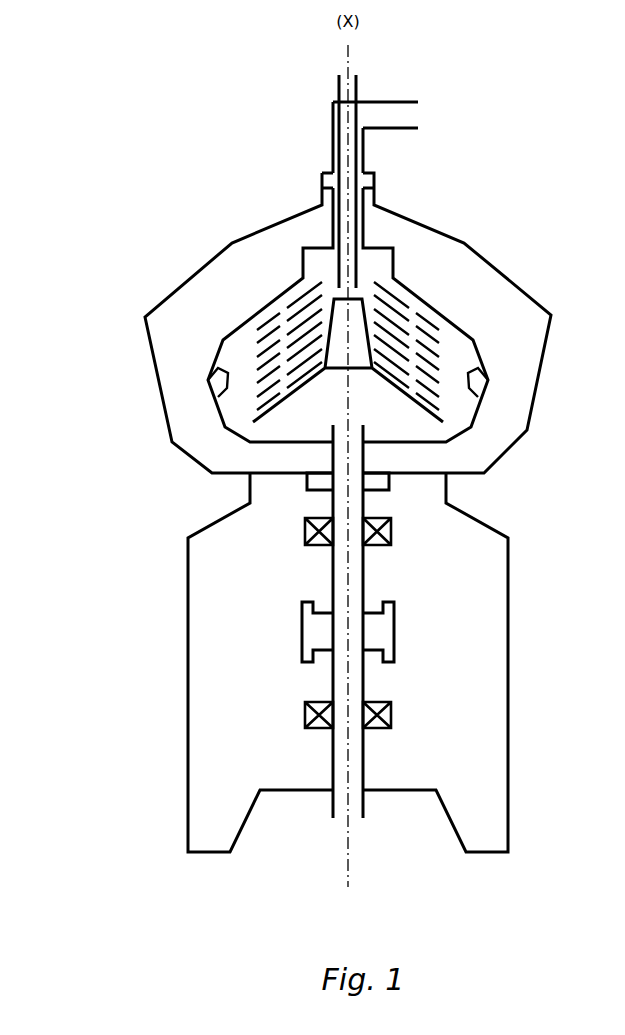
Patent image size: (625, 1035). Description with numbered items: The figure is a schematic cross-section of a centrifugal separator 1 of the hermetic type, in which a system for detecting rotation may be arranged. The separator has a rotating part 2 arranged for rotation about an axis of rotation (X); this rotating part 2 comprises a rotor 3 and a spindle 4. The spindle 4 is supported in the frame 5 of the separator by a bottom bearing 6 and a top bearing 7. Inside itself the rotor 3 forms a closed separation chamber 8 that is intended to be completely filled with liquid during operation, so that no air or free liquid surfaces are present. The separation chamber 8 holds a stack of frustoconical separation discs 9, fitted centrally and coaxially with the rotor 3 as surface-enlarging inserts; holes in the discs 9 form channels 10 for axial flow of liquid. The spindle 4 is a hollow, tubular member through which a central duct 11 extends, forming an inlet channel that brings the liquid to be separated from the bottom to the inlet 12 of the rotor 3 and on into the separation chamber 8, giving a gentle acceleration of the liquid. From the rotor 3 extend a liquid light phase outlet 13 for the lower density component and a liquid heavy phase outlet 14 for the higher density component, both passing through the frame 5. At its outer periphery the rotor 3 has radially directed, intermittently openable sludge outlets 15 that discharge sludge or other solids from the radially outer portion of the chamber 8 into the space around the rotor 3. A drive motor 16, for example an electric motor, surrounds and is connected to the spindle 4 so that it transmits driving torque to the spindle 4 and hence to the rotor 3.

The centrifugal separator 1 is at (217, 118).
The rotating part 2 is at (460, 318).
The rotor 3 is at (268, 303).
The spindle 4 is at (330, 575).
The frame 5 is at (178, 300).
The bottom bearing 6 is at (390, 713).
The top bearing 7 is at (303, 532).
The separation chamber 8 is at (247, 397).
The frustoconical separation discs 9 is at (260, 343).
The channels 10 is at (413, 327).
The central duct 11 is at (340, 677).
The inlet 12 is at (343, 414).
The liquid light phase outlet 13 is at (352, 69).
The liquid heavy phase outlet 14 is at (418, 112).
The sludge outlets 15 is at (477, 390).
The drive motor 16 is at (317, 638).